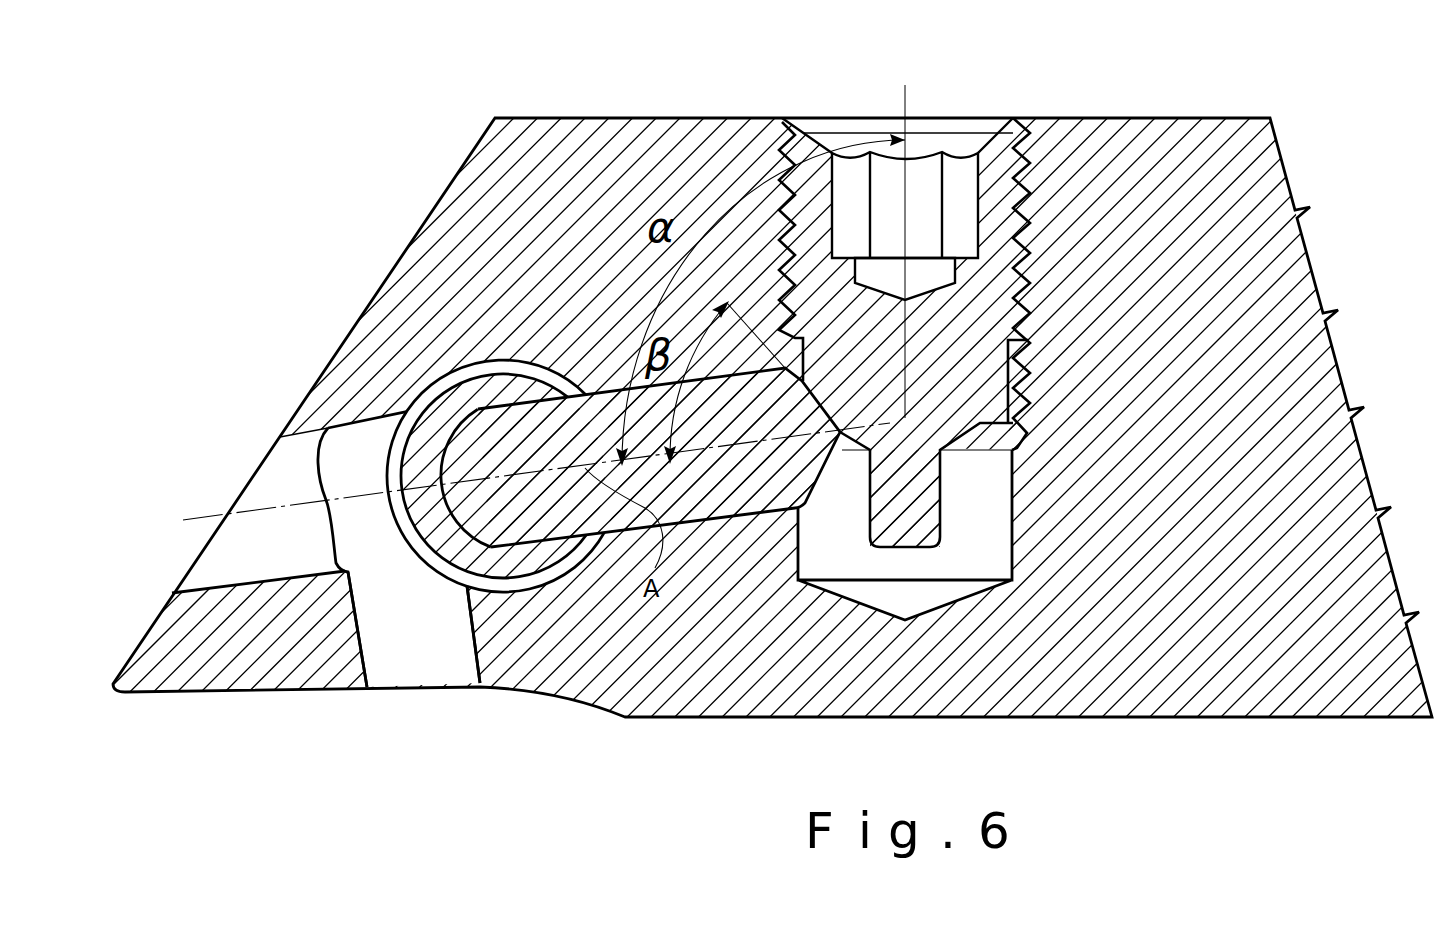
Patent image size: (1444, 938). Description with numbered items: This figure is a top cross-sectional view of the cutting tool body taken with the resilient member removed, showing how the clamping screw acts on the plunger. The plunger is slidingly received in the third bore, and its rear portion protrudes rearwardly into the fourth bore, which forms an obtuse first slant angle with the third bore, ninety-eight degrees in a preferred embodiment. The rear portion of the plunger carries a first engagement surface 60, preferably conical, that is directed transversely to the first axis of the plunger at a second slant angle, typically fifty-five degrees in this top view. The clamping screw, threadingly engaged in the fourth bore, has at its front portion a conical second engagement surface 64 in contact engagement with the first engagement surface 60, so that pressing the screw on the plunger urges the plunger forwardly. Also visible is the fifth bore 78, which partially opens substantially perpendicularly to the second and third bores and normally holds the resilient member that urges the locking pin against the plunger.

The first engagement surface 60 is at (805, 372).
The second engagement surface 64 is at (965, 420).
The fifth bore 78 is at (402, 622).